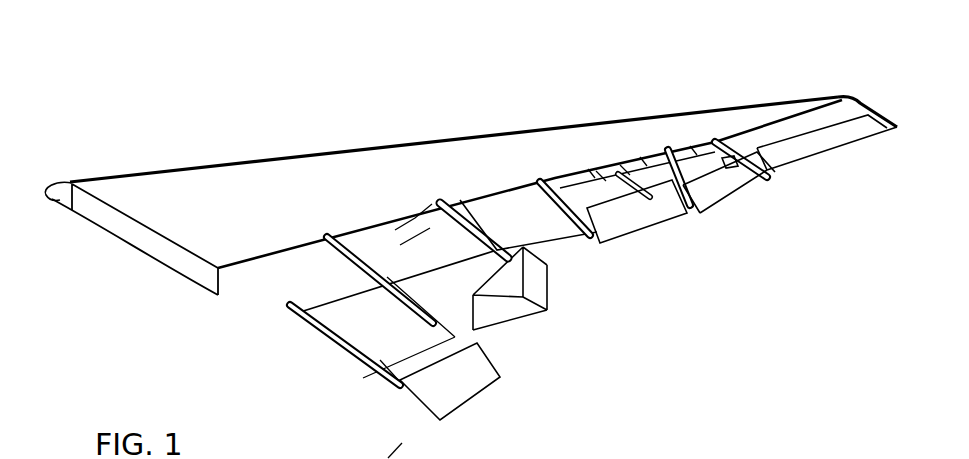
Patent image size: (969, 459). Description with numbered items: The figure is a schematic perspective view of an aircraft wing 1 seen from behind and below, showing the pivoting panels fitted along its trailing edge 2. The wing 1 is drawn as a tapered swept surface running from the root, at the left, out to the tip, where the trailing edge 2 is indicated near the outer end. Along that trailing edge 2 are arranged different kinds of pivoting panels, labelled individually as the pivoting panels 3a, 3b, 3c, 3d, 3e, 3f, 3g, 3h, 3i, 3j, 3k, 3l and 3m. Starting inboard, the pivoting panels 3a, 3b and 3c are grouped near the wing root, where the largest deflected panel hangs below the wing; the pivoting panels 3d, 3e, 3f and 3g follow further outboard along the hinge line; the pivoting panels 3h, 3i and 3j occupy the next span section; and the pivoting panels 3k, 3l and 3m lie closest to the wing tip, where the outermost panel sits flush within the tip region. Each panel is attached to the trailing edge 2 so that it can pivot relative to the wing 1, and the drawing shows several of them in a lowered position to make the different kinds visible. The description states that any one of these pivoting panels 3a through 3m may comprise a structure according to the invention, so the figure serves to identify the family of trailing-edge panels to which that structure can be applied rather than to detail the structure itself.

The aircraft wing 1 is at (195, 188).
The trailing edge 2 is at (842, 73).
The pivoting panel 3a is at (300, 327).
The pivoting panel 3b is at (484, 298).
The pivoting panel 3c is at (436, 204).
The pivoting panel 3d is at (569, 238).
The pivoting panel 3e is at (553, 177).
The pivoting panel 3f is at (601, 170).
The pivoting panel 3g is at (627, 181).
The pivoting panel 3h is at (668, 227).
The pivoting panel 3i is at (669, 149).
The pivoting panel 3j is at (717, 141).
The pivoting panel 3k is at (746, 201).
The pivoting panel 3l is at (732, 165).
The pivoting panel 3m is at (854, 148).